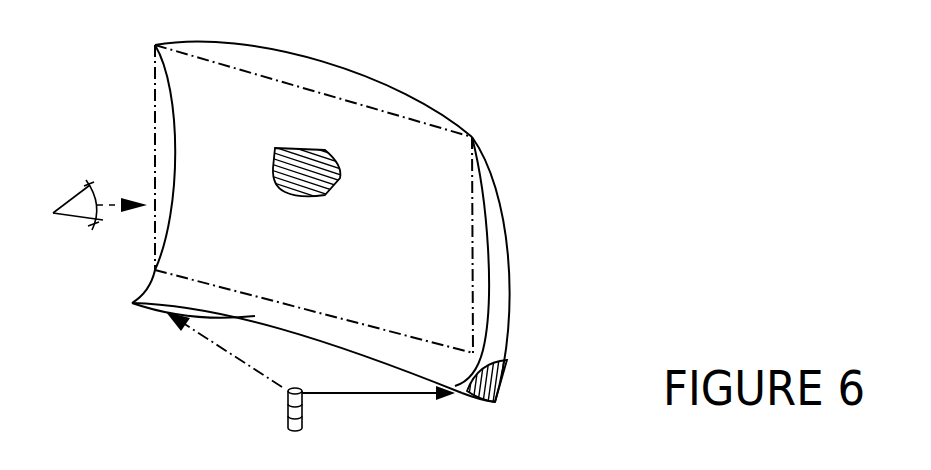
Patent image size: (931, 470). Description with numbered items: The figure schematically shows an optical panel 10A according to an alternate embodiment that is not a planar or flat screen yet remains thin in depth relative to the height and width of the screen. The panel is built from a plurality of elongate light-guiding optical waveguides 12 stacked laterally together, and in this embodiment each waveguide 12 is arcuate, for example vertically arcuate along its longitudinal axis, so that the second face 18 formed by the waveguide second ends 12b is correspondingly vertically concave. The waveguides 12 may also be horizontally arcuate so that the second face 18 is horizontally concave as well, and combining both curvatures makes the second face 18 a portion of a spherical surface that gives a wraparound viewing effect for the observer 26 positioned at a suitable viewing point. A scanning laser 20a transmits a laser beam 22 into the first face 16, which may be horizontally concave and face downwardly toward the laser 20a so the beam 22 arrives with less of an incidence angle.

The optical panel 10A is at (498, 182).
The optical waveguide 12 is at (506, 378).
The second end 12b is at (308, 197).
The first face 16 is at (478, 399).
The second face 18 is at (480, 256).
The scanning laser 20a is at (302, 413).
The laser beam 22 is at (362, 393).
The observer 26 is at (72, 217).